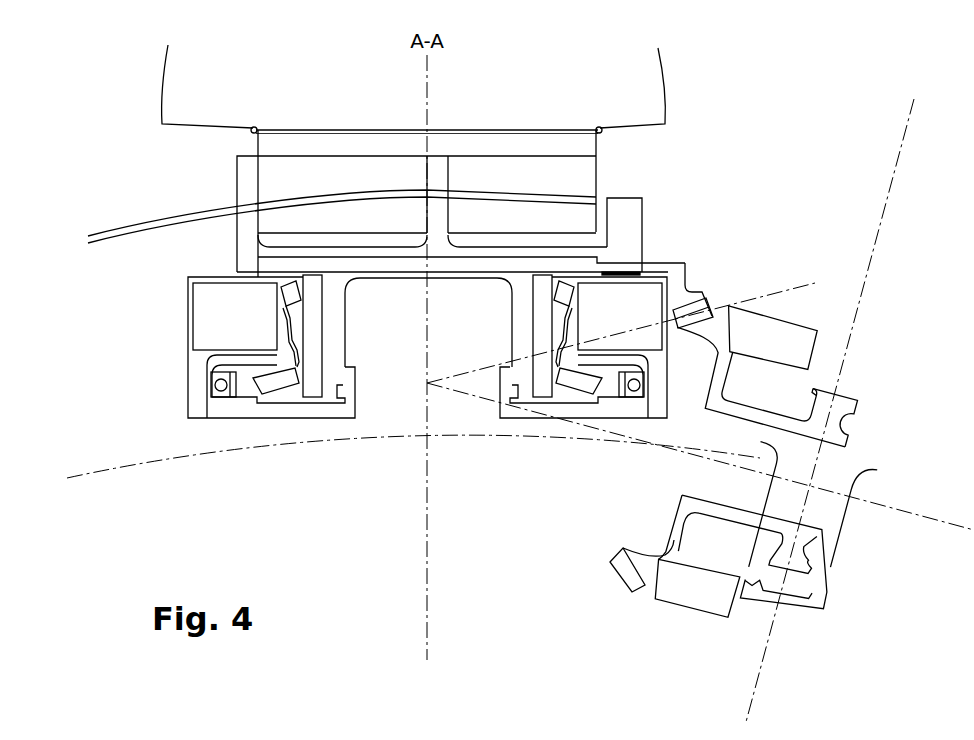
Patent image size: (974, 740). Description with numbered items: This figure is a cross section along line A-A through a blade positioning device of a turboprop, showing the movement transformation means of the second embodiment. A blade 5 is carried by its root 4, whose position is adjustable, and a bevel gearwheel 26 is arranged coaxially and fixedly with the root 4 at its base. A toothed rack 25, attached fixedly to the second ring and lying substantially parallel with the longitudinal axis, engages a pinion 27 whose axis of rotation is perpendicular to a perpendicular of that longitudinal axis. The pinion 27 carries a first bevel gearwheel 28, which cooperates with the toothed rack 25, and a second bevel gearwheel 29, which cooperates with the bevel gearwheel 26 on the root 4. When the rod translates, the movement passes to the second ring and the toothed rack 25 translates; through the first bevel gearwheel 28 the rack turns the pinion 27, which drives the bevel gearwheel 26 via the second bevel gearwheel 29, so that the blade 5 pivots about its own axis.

The root 4 is at (597, 145).
The blade 5 is at (666, 85).
The toothed rack 25 is at (746, 566).
The bevel gearwheel 26 is at (703, 280).
The pinion 27 is at (766, 370).
The first bevel gearwheel 28 is at (829, 418).
The second bevel gearwheel 29 is at (623, 550).